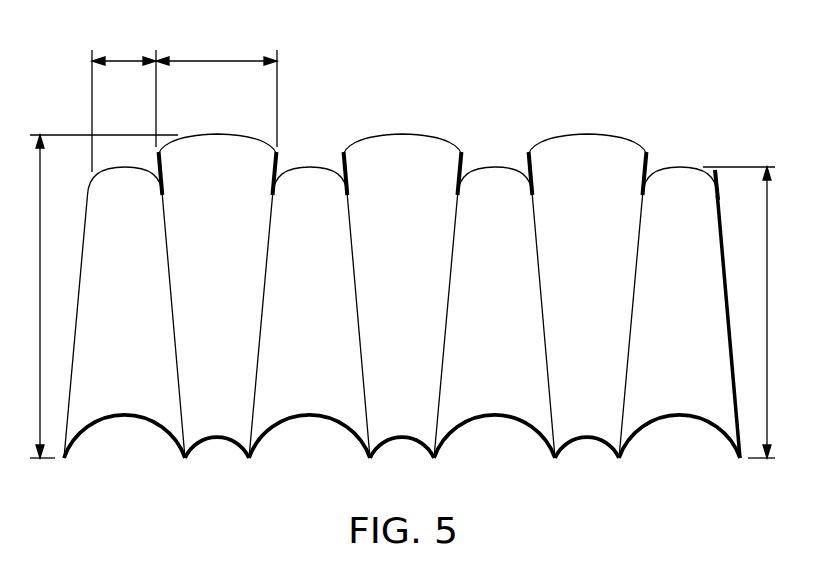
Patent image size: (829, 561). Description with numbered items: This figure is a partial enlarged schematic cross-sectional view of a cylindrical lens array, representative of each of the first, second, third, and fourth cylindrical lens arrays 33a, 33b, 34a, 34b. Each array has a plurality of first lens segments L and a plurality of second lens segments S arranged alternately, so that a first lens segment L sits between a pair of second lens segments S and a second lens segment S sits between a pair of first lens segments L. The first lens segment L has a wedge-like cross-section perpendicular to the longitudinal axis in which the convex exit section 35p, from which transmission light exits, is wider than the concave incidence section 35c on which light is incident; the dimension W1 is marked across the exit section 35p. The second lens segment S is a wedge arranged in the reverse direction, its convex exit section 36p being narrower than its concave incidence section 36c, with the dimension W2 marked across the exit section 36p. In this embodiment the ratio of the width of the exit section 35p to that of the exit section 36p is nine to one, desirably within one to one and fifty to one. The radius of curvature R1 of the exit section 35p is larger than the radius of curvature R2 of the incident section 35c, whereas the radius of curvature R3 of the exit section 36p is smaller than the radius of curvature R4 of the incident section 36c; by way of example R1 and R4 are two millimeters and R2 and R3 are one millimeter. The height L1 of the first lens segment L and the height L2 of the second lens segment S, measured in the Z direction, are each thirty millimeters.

The first cylindrical lens array 33a is at (402, 271).
The second cylindrical lens array 33b is at (402, 271).
The third cylindrical lens array 34a is at (402, 271).
The fourth cylindrical lens array 34b is at (592, 57).
The exit section 35p is at (217, 133).
The incidence section 35c is at (238, 448).
The exit section 36p is at (124, 166).
The incidence section 36c is at (139, 418).
The radius of curvature R1 is at (190, 138).
The radius of curvature R2 is at (202, 448).
The radius of curvature R3 is at (109, 170).
The radius of curvature R4 is at (93, 434).
The first lens segment L is at (402, 133).
The second lens segment S is at (310, 166).
The height of the first lens segment L1 is at (93, 296).
The height of the second lens segment L2 is at (750, 312).
The width of large tooth tip W1 is at (216, 90).
The width of small tooth tip W2 is at (124, 102).